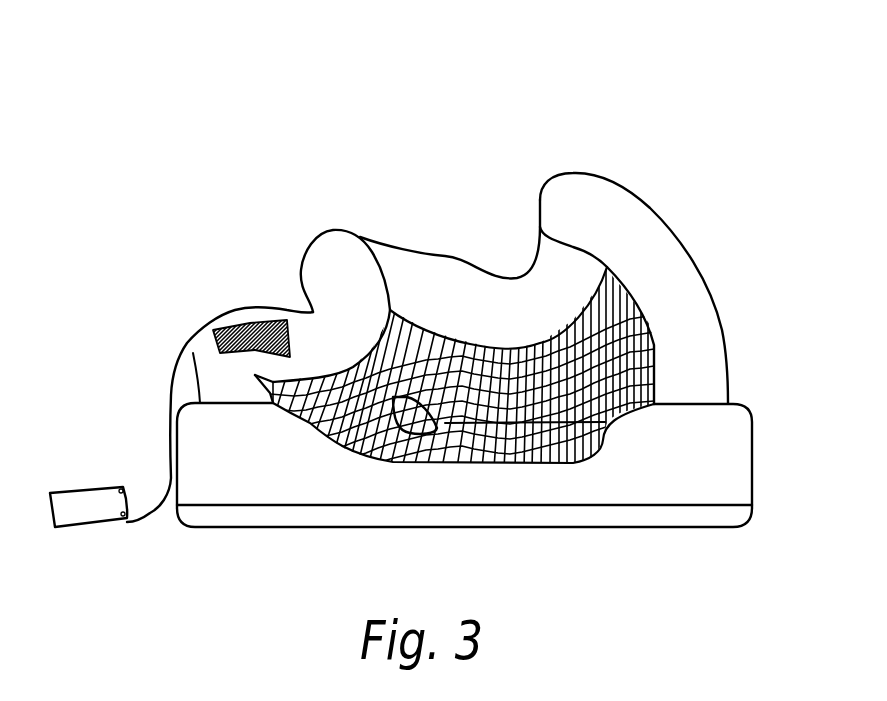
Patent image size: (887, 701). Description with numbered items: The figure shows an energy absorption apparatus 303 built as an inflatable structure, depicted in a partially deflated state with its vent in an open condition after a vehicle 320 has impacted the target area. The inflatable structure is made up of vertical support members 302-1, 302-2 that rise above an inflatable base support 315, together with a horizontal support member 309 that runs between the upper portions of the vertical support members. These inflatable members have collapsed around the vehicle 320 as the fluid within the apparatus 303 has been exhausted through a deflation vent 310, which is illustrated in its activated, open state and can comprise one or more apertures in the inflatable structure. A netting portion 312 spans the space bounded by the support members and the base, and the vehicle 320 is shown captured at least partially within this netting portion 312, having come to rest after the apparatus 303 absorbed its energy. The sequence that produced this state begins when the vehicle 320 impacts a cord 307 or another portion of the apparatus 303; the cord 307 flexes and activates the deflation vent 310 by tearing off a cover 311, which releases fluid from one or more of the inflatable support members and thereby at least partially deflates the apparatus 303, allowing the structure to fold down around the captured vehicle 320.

The energy absorption apparatus 303 is at (311, 92).
The vertical support member 302-1 is at (313, 241).
The vertical support member 302-2 is at (622, 188).
The horizontal support member 309 is at (423, 248).
The deflation vent 310 is at (212, 311).
The cord 307 is at (170, 400).
The cover 311 is at (92, 488).
The netting portion 312 is at (607, 347).
The inflatable base support 315 is at (752, 482).
The vehicle 320 is at (400, 411).